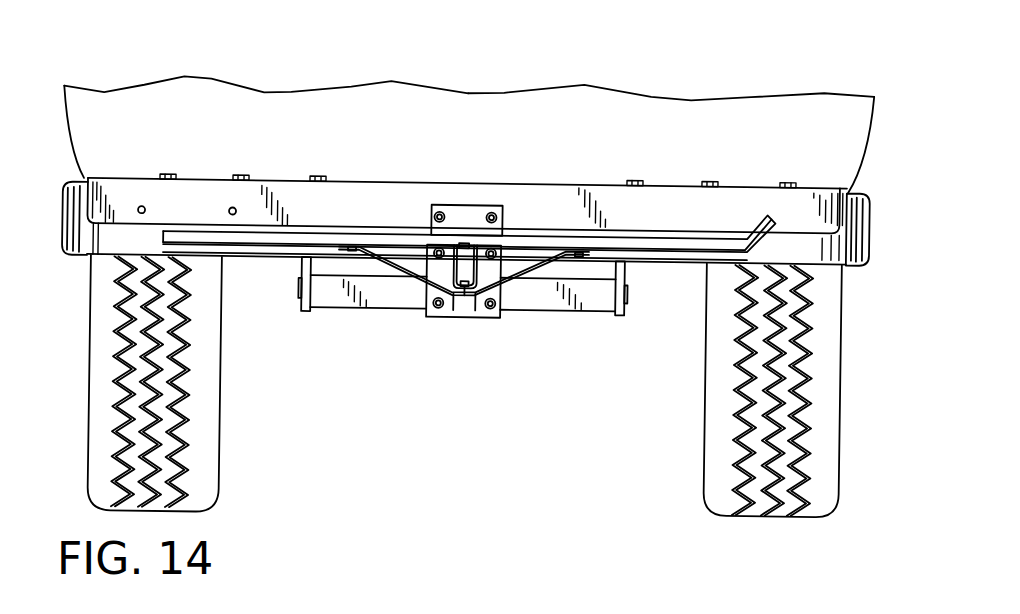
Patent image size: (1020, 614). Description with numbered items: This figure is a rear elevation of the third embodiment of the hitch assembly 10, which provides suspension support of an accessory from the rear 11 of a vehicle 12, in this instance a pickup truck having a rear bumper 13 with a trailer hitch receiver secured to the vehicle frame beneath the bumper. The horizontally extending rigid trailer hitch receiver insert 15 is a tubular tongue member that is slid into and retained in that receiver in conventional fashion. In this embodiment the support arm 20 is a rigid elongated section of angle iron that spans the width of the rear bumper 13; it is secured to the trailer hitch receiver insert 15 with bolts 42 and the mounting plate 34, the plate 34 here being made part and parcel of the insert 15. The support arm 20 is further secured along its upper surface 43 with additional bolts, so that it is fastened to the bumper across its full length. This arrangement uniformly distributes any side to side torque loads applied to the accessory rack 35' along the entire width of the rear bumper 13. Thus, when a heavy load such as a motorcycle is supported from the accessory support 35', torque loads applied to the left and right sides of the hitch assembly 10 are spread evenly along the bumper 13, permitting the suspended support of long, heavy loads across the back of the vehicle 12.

The hitch assembly 10 is at (388, 389).
The rear 11 is at (801, 110).
The vehicle 12 is at (140, 96).
The rear bumper 13 is at (699, 257).
The trailer hitch receiver insert 15 is at (495, 309).
The support arm 20 is at (458, 177).
The mounting plate 34 is at (505, 284).
The accessory rack 35' is at (468, 287).
The bolts 42 is at (445, 202).
The upper surface 43 is at (363, 174).